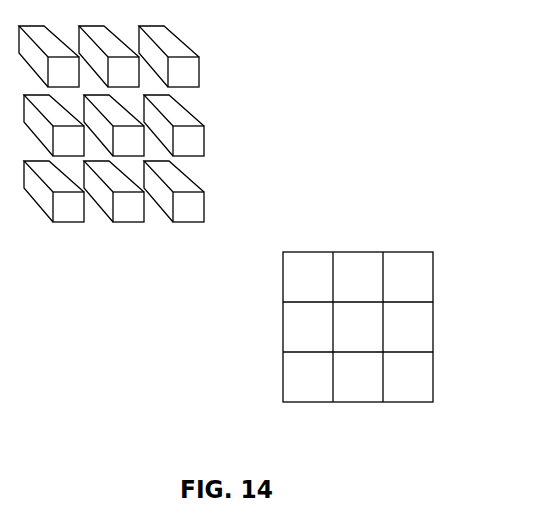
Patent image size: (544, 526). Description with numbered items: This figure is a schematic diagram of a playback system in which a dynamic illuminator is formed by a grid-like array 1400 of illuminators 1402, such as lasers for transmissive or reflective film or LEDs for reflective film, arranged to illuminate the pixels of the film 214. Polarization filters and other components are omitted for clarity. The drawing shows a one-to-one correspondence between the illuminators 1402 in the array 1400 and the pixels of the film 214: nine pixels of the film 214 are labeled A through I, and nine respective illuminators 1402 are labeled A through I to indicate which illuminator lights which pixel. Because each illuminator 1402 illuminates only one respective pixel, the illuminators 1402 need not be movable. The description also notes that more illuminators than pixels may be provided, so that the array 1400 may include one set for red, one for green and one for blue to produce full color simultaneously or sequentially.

The array of illuminators 1400 is at (250, 118).
The illuminator 1402 is at (171, 42).
The film 214 is at (436, 271).